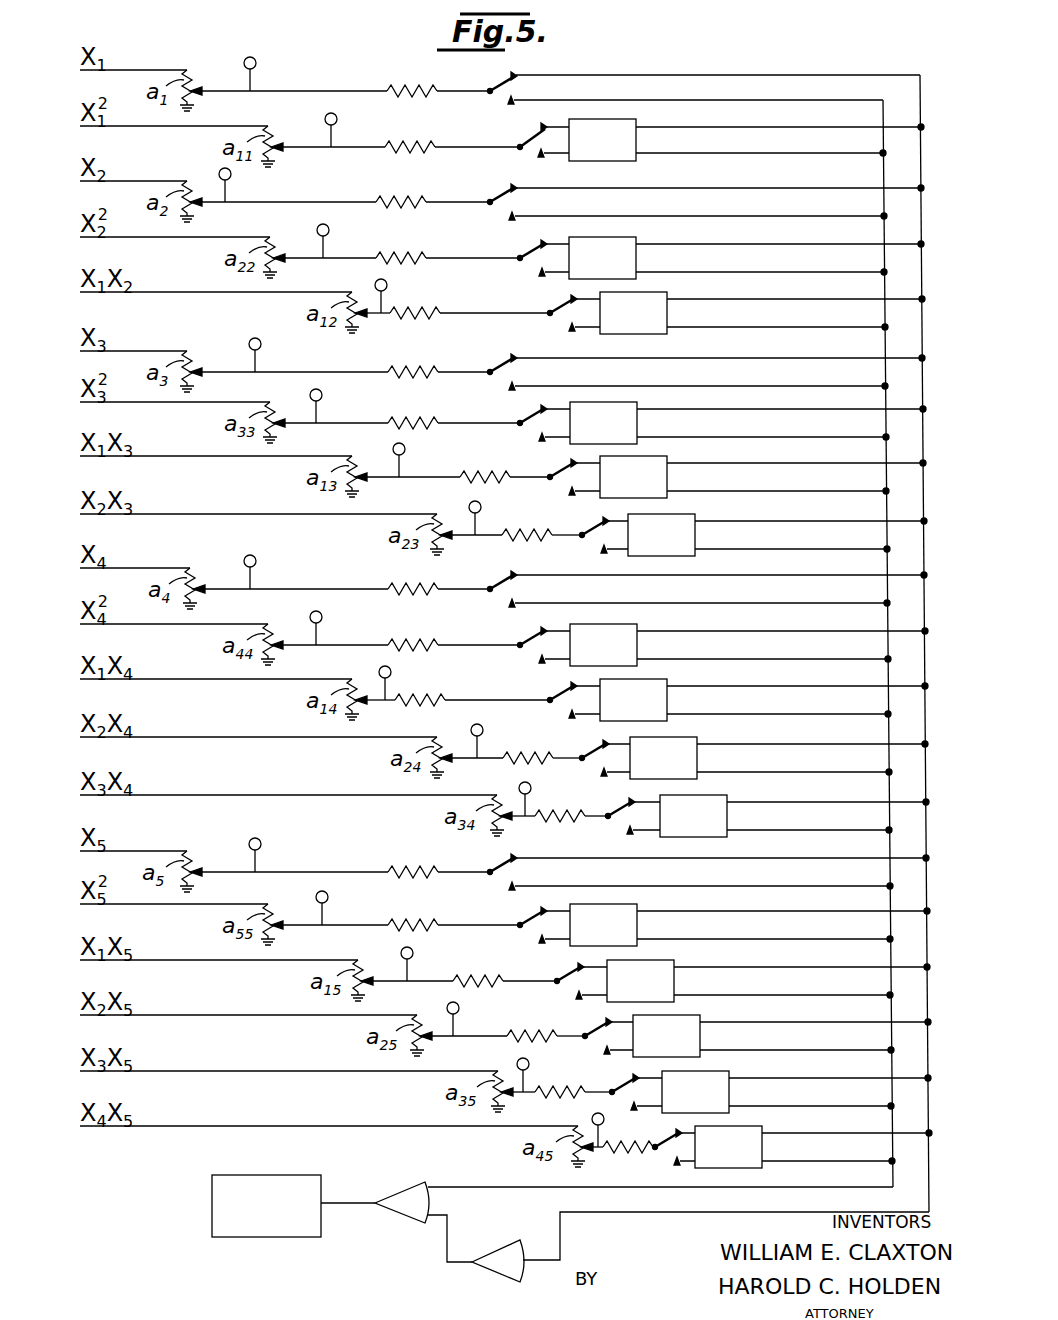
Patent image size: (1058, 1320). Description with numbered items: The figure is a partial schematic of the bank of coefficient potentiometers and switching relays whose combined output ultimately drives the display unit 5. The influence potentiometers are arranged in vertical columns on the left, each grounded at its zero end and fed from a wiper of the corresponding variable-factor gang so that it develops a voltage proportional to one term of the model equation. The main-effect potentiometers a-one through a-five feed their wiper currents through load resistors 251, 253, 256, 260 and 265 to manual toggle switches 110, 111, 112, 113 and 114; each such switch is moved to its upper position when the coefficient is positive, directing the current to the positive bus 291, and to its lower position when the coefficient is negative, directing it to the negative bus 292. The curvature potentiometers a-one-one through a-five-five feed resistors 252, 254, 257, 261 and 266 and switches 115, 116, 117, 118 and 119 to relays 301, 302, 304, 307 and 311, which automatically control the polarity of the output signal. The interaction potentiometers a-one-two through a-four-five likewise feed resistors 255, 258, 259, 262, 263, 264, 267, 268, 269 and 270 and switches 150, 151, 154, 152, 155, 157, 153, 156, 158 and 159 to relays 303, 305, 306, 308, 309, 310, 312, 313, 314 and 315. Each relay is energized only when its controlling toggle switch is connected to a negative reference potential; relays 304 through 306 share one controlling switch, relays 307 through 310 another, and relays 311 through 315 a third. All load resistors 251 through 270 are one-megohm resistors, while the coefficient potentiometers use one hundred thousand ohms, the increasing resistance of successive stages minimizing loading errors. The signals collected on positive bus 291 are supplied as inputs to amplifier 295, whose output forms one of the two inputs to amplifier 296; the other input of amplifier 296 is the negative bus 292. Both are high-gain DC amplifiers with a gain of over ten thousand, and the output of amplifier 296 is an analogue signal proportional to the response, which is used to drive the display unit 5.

The display unit 5 is at (211, 1184).
The switch 110 is at (500, 82).
The switch 111 is at (500, 193).
The switch 112 is at (500, 363).
The switch 113 is at (502, 582).
The switch 114 is at (500, 874).
The switch 115 is at (530, 138).
The switch 116 is at (530, 249).
The switch 117 is at (530, 414).
The switch 118 is at (530, 636).
The switch 119 is at (532, 927).
The switch 150 is at (560, 304).
The switch 151 is at (560, 468).
The switch 152 is at (560, 691).
The switch 153 is at (567, 972).
The switch 154 is at (594, 526).
The switch 155 is at (596, 754).
The switch 156 is at (601, 1029).
The switch 157 is at (620, 811).
The switch 158 is at (624, 1087).
The switch 159 is at (662, 1152).
The resistor 251 is at (409, 83).
The resistor 252 is at (407, 139).
The load resistor 253 is at (398, 194).
The load resistor 254 is at (398, 250).
The resistor 255 is at (412, 305).
The load resistor 256 is at (410, 364).
The load resistor 257 is at (410, 415).
The load resistor 258 is at (482, 469).
The load resistor 259 is at (526, 527).
The load resistor 260 is at (404, 581).
The load resistor 261 is at (410, 637).
The load resistor 262 is at (424, 692).
The load resistor 263 is at (526, 750).
The load resistor 264 is at (557, 808).
The load resistor 265 is at (406, 864).
The load resistor 266 is at (410, 917).
The load resistor 267 is at (474, 973).
The load resistor 268 is at (531, 1028).
The load resistor 269 is at (557, 1084).
The load resistor 270 is at (613, 1144).
The positive bus 291 is at (924, 72).
The negative bus 292 is at (884, 102).
The amplifier 295 is at (496, 1274).
The amplifier 296 is at (404, 1214).
The relay 301 is at (636, 120).
The relay 302 is at (633, 237).
The relay 303 is at (665, 292).
The relay 304 is at (635, 402).
The relay 305 is at (665, 456).
The relay 306 is at (693, 514).
The relay 307 is at (635, 624).
The relay 308 is at (665, 679).
The relay 309 is at (695, 737).
The relay 310 is at (725, 795).
The relay 311 is at (637, 925).
The relay 312 is at (674, 981).
The relay 313 is at (700, 1036).
The relay 314 is at (729, 1092).
The relay 315 is at (762, 1147).